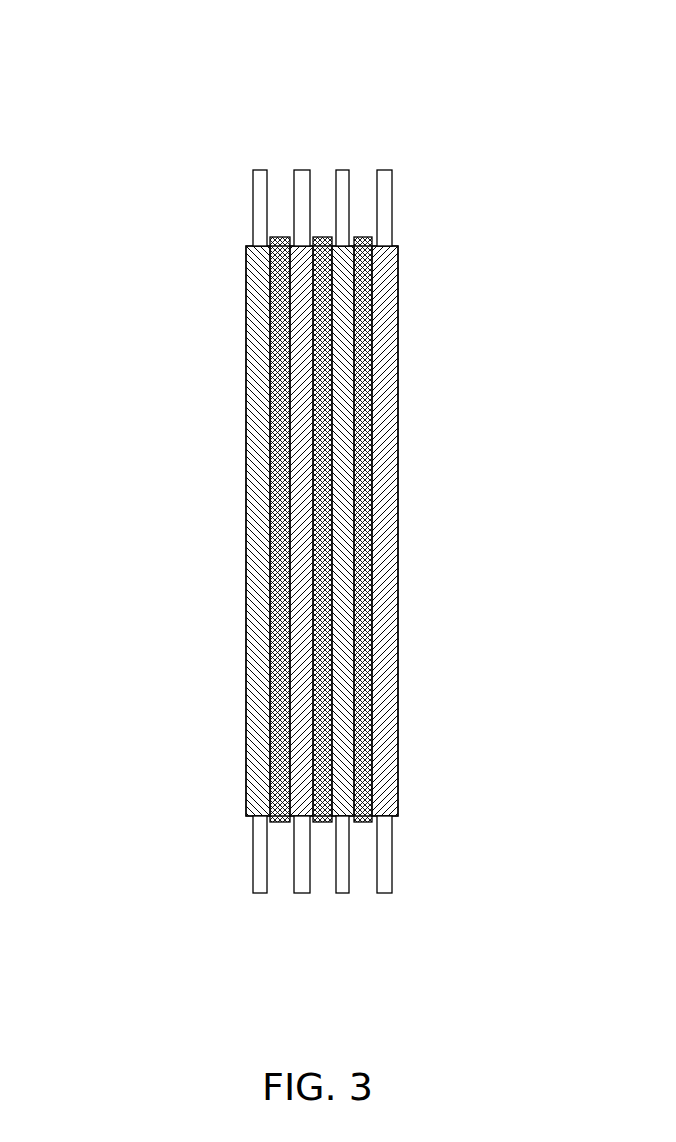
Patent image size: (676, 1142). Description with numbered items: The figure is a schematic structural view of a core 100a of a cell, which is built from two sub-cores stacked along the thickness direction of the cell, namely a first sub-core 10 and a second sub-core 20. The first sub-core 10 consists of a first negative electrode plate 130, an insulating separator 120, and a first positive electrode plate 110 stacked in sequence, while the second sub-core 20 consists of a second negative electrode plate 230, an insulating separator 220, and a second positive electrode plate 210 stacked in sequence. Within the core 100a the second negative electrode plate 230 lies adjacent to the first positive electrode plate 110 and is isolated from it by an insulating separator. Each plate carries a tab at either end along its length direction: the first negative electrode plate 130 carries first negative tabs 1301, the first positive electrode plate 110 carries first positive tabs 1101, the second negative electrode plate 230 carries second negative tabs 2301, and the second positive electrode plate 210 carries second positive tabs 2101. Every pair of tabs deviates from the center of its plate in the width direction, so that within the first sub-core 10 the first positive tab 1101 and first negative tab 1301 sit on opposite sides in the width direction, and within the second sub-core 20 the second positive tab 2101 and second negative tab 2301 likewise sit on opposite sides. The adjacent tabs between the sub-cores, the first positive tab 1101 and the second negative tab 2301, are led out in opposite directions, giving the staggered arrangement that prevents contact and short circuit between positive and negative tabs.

The core 100a is at (351, 32).
The first sub-core 10 is at (193, 529).
The first positive electrode plate 110 is at (128, 254).
The insulating separator 120 is at (272, 368).
The first negative electrode plate 130 is at (252, 290).
The second sub-core 20 is at (438, 529).
The second positive electrode plate 210 is at (482, 763).
The insulating separator 220 is at (370, 620).
The second negative electrode plate 230 is at (347, 727).
The first negative tab 1301 is at (255, 175).
The first positive tab 1101 is at (298, 175).
The second negative tab 2301 is at (344, 175).
The second positive tab 2101 is at (390, 170).